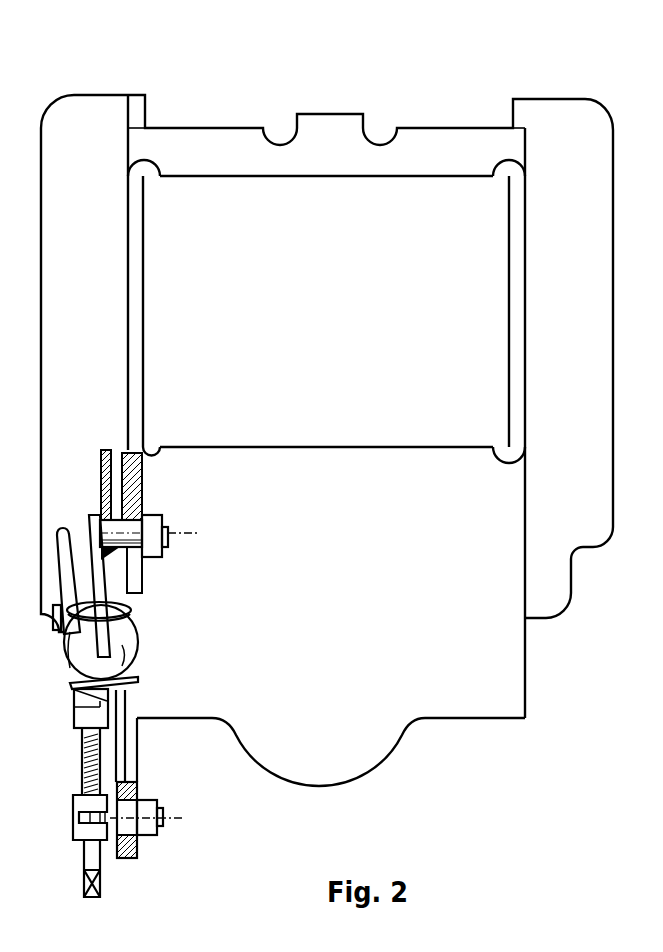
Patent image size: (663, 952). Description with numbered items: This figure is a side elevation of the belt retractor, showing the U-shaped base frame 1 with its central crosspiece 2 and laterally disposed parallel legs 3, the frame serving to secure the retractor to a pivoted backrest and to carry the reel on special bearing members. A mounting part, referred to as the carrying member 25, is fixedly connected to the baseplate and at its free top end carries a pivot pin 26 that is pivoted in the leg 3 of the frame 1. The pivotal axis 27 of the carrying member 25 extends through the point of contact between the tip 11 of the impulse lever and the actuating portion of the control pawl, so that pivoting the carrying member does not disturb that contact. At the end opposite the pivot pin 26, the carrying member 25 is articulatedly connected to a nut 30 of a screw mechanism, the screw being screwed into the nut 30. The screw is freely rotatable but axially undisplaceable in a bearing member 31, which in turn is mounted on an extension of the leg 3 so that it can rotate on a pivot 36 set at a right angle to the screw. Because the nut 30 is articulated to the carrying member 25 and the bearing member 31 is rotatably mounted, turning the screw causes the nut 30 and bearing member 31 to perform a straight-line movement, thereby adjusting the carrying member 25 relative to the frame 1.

The base frame 1 is at (446, 88).
The central crosspiece 2 is at (393, 552).
The leg 3 is at (141, 108).
The tip 11 is at (60, 537).
The carrying member 25 is at (97, 567).
The pivot pin 26 is at (130, 527).
The pivotal axis 27 is at (186, 533).
The nut 30 is at (78, 713).
The bearing member 31 is at (80, 805).
The pivot 36 is at (183, 818).